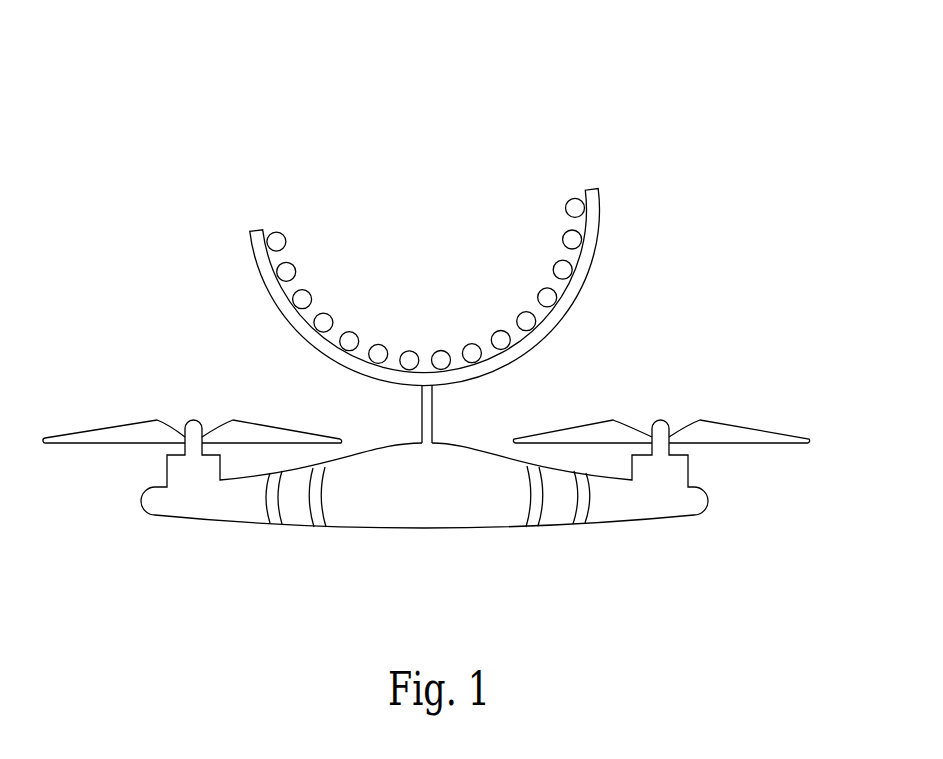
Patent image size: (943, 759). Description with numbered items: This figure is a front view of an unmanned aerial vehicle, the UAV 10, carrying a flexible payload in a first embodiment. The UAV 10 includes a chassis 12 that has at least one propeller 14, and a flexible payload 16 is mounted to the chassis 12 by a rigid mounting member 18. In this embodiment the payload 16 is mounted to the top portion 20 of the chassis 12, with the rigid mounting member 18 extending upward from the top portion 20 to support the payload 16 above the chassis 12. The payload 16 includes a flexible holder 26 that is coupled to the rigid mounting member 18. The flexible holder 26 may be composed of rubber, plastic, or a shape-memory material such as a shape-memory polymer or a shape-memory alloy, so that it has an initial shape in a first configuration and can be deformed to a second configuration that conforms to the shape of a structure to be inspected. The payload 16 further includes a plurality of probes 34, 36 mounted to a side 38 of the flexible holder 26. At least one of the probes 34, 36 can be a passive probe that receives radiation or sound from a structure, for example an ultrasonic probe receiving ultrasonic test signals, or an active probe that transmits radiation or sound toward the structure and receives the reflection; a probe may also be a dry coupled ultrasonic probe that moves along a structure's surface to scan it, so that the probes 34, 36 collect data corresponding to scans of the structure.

The UAV 10 is at (522, 97).
The chassis 12 is at (740, 497).
The propeller 14 is at (86, 430).
The flexible payload 16 is at (632, 270).
The rigid mounting member 18 is at (433, 418).
The top portion 20 is at (384, 447).
The flexible holder 26 is at (256, 276).
The probe 34 is at (352, 332).
The probe 36 is at (441, 350).
The side 38 is at (283, 262).